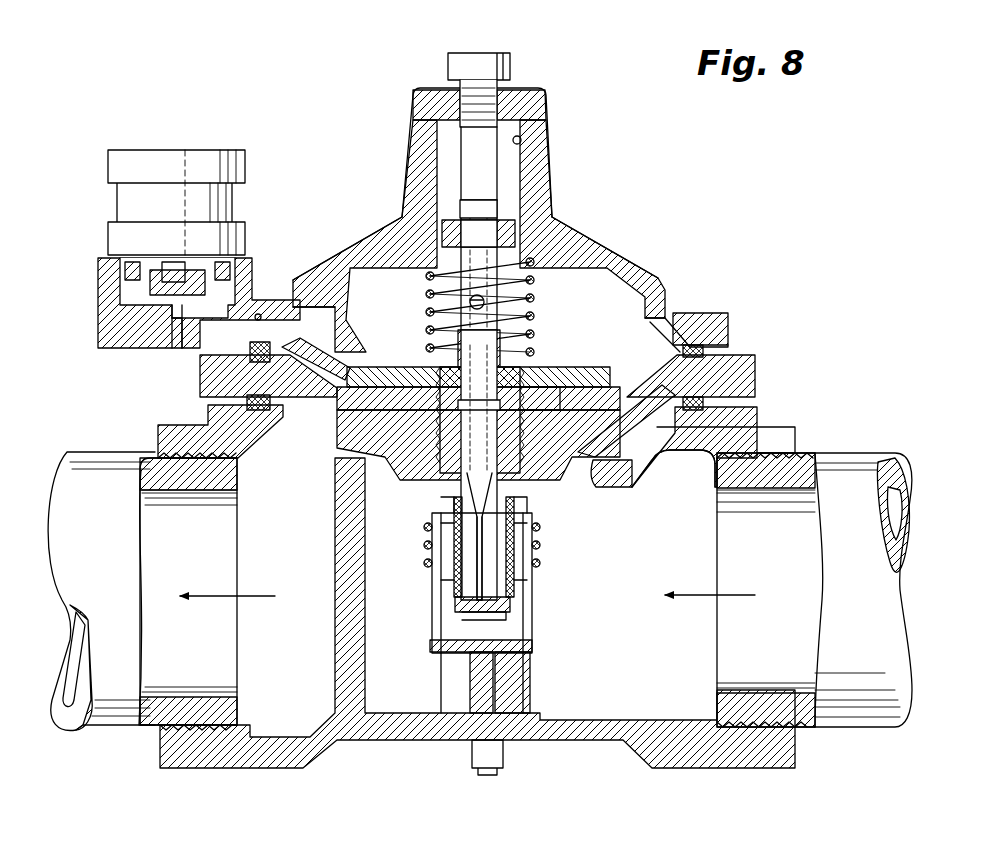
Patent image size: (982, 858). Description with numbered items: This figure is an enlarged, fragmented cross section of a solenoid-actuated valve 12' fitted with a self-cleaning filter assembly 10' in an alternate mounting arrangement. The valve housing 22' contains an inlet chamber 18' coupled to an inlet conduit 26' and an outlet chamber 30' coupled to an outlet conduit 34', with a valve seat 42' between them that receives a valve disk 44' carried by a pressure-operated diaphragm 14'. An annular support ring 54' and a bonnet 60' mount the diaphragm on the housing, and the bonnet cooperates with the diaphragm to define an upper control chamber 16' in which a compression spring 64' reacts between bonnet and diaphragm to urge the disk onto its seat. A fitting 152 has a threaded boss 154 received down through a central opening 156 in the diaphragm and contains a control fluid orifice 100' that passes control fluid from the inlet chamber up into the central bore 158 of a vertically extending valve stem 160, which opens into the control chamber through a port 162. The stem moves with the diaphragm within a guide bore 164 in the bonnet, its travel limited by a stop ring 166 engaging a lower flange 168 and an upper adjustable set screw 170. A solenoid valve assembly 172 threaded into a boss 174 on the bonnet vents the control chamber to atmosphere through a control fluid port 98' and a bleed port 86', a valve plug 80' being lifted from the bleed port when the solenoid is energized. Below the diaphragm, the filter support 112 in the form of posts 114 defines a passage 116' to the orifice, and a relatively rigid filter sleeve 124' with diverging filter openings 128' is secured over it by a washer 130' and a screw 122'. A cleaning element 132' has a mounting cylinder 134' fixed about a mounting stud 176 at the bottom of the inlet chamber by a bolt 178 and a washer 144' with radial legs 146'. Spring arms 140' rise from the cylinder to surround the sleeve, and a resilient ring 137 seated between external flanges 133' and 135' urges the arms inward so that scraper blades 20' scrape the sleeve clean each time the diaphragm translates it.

The self-cleaning filter assembly 10' is at (649, 547).
The solenoid-actuated valve 12' is at (812, 217).
The pressure-operated diaphragm 14' is at (478, 387).
The upper control chamber 16' is at (679, 313).
The inlet chamber 18' is at (744, 629).
The scraper blades 20' is at (478, 502).
The valve housing 22' is at (477, 615).
The inlet conduit 26' is at (863, 574).
The outlet chamber 30' is at (219, 629).
The outlet conduit 34' is at (101, 606).
The valve seat 42' is at (624, 449).
The valve disk 44' is at (647, 473).
The annular support ring 54' is at (719, 357).
The bonnet 60' is at (622, 247).
The compression spring 64' is at (532, 306).
The valve plug 80' is at (126, 257).
The bleed port 86' is at (150, 359).
The control fluid port 98' is at (283, 279).
The control fluid orifice 100' is at (451, 465).
The filter support 112 is at (455, 580).
The posts 114 is at (484, 576).
The passage 116' is at (476, 447).
The screw 122' is at (482, 614).
The filter sleeve 124' is at (450, 551).
The diverging filter openings 128' is at (543, 583).
The washer 130' is at (530, 607).
The cleaning element 132' is at (401, 641).
The external flange 133' is at (534, 547).
The mounting cylinder 134' is at (546, 683).
The external flange 135' is at (583, 536).
The resilient ring 137 is at (424, 535).
The spring arms 140' is at (467, 579).
The washer 144' is at (438, 682).
The radial legs 146' is at (518, 646).
The fitting 152 is at (543, 366).
The threaded boss 154 is at (475, 398).
The central opening 156 is at (558, 372).
The central bore 158 is at (445, 333).
The valve stem 160 is at (426, 290).
The port 162 is at (484, 303).
The guide bore 164 is at (523, 141).
The stop ring 166 is at (515, 232).
The lower flange 168 is at (412, 222).
The upper adjustable set screw 170 is at (505, 85).
The solenoid valve assembly 172 is at (245, 213).
The boss 174 is at (105, 330).
The mounting stud 176 is at (510, 710).
The bolt 178 is at (490, 768).